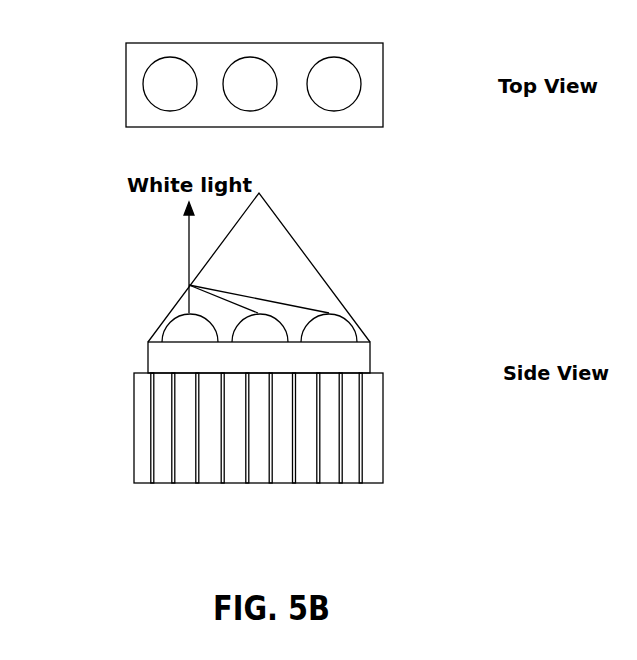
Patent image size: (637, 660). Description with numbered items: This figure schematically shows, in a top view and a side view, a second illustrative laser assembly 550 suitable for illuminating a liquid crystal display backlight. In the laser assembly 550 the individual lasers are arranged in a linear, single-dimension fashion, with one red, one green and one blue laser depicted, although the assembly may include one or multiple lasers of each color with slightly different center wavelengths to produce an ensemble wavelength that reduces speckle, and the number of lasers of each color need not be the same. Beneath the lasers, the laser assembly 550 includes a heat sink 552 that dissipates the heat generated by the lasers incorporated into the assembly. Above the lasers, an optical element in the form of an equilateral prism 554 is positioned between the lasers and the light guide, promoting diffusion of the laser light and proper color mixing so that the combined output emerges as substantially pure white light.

The laser assembly 550 is at (383, 87).
The heat sink 552 is at (383, 428).
The equilateral prism 554 is at (316, 269).